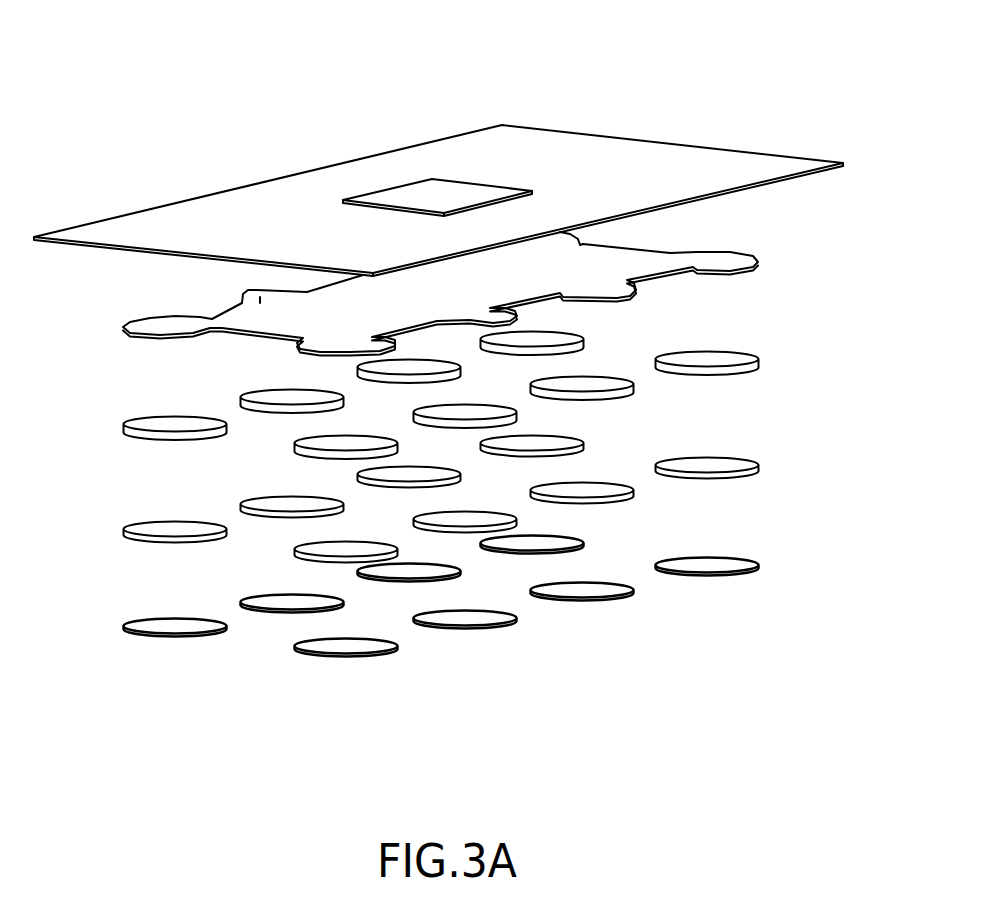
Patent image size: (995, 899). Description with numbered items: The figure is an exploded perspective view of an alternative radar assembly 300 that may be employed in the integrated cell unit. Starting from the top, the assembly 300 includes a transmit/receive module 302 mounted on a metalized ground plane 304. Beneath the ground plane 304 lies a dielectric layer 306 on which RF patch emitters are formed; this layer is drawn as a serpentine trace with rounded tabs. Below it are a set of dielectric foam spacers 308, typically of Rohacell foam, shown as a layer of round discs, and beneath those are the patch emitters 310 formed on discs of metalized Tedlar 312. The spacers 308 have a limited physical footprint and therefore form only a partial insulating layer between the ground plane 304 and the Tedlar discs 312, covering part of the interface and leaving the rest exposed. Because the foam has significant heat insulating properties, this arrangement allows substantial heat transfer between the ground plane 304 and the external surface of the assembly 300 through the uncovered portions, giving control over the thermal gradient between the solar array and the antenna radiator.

The radar assembly 300 is at (237, 135).
The transmit/receive module 302 is at (408, 195).
The metalized ground plane 304 is at (687, 142).
The dielectric layer 306 is at (735, 252).
The dielectric foam spacers 308 is at (743, 355).
The patch emitters 310 is at (742, 462).
The discs of metalized Tedlar 312 is at (743, 562).